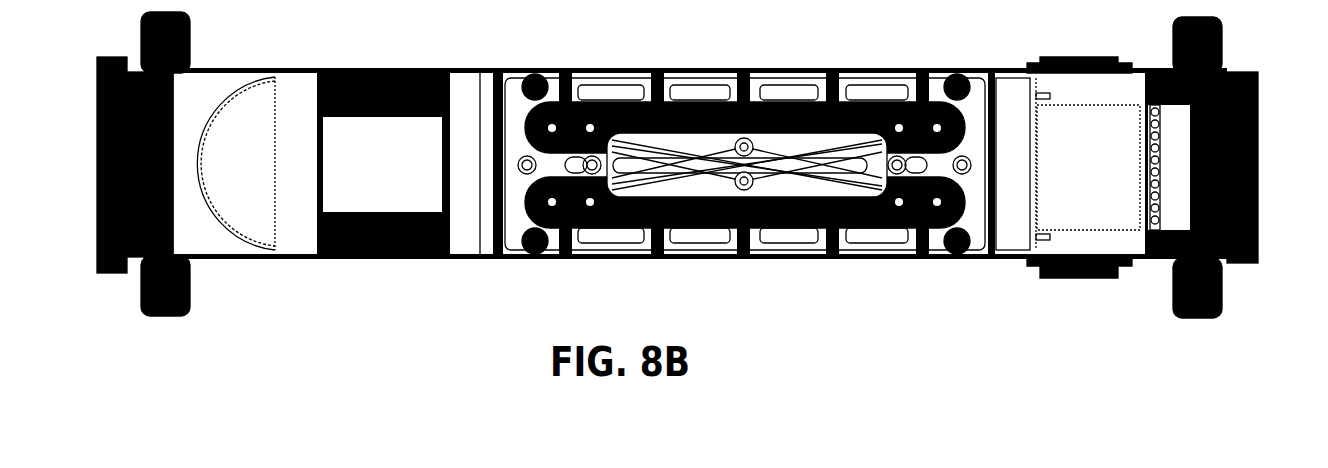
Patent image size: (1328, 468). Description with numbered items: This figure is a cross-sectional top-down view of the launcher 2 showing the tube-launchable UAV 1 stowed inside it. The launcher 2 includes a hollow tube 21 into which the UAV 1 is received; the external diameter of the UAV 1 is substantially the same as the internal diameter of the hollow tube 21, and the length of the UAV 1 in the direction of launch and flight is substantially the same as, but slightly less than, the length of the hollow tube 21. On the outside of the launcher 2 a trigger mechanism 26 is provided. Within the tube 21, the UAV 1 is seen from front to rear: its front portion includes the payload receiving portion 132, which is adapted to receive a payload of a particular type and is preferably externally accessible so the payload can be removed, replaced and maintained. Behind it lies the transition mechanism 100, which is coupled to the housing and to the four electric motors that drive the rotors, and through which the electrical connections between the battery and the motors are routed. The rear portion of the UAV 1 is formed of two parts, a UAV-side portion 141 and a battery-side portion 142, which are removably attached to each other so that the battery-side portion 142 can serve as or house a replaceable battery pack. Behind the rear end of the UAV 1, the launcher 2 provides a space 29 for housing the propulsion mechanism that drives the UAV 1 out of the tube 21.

The UAV 1 is at (209, 244).
The launcher 2 is at (1276, 284).
The hollow tube 21 is at (218, 68).
The trigger mechanism 26 is at (1067, 55).
The space 29 is at (1172, 208).
The transition mechanism 100 is at (771, 183).
The payload receiving portion 132 is at (380, 195).
The UAV-side portion 141 is at (1018, 205).
The battery-side portion 142 is at (1088, 203).